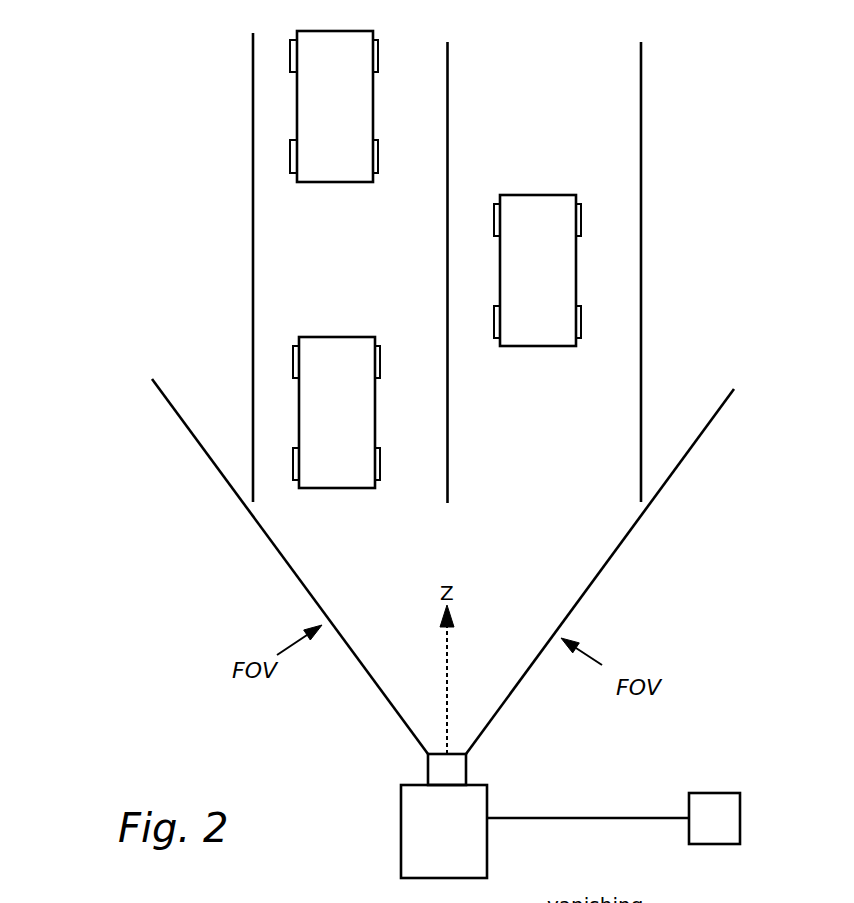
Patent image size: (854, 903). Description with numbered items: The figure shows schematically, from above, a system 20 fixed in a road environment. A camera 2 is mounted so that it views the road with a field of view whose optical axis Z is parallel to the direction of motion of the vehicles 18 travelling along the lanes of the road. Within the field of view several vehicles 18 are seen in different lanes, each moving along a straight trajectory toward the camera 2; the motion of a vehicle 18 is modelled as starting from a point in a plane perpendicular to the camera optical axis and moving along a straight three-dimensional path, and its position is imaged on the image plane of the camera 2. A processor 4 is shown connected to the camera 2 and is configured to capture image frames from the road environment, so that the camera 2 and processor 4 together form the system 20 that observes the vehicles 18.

The camera 2 is at (487, 790).
The processor 4 is at (613, 818).
The vehicle 18 is at (373, 95).
The system 20 is at (73, 598).